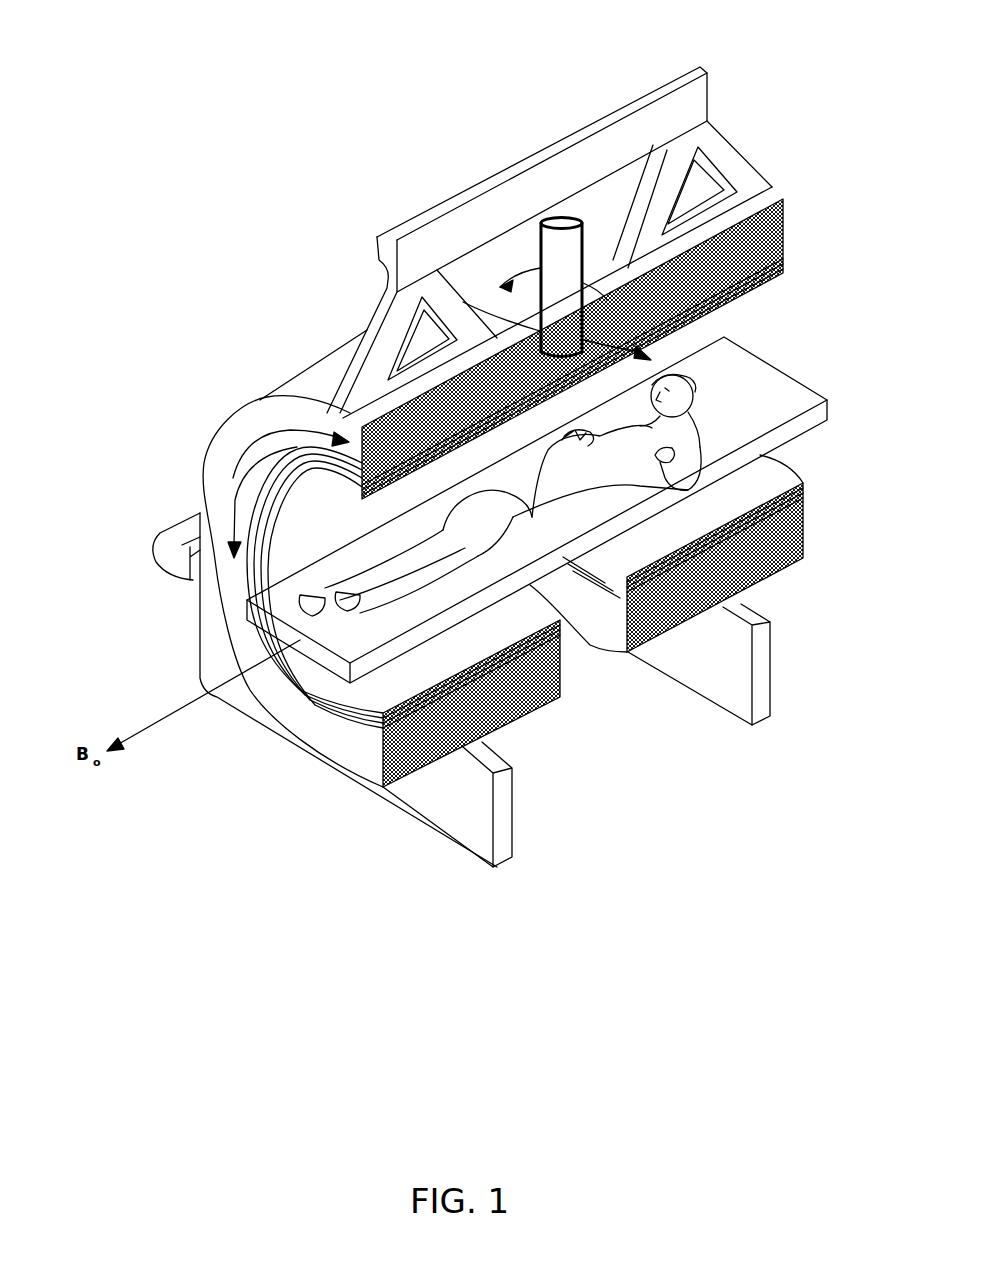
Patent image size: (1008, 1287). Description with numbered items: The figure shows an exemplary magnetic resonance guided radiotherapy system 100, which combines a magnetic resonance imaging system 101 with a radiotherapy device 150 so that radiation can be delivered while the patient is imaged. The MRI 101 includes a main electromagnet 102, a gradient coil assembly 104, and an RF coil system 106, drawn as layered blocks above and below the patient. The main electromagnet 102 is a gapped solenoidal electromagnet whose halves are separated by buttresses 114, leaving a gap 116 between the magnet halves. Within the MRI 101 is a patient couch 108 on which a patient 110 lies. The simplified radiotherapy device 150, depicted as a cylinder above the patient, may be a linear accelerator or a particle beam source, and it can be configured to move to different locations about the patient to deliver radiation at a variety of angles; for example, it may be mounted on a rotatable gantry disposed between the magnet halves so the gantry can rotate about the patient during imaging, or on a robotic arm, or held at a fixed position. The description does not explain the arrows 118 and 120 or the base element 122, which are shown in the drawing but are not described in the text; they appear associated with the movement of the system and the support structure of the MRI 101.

The magnetic resonance guided radiotherapy system 100 is at (262, 260).
The magnetic resonance imaging system 101 is at (233, 412).
The main electromagnet 102 is at (760, 233).
The gradient coil assembly 104 is at (781, 259).
The RF coil system 106 is at (781, 274).
The patient couch 108 is at (790, 407).
The patient 110 is at (592, 497).
The buttresses 114 is at (488, 210).
The gap 116 is at (580, 650).
The vertical motion arrow 118 is at (247, 547).
The rotation arrow 120 is at (247, 460).
The support base 122 is at (157, 725).
The radiotherapy device 150 is at (583, 240).